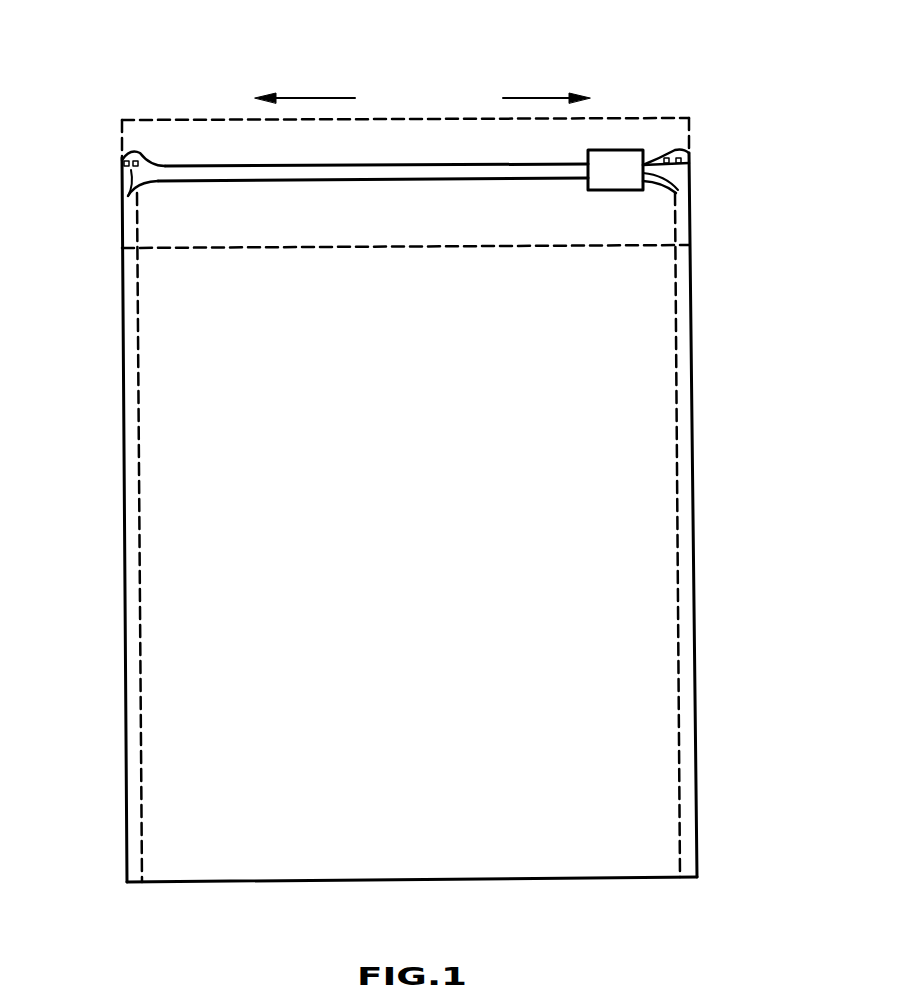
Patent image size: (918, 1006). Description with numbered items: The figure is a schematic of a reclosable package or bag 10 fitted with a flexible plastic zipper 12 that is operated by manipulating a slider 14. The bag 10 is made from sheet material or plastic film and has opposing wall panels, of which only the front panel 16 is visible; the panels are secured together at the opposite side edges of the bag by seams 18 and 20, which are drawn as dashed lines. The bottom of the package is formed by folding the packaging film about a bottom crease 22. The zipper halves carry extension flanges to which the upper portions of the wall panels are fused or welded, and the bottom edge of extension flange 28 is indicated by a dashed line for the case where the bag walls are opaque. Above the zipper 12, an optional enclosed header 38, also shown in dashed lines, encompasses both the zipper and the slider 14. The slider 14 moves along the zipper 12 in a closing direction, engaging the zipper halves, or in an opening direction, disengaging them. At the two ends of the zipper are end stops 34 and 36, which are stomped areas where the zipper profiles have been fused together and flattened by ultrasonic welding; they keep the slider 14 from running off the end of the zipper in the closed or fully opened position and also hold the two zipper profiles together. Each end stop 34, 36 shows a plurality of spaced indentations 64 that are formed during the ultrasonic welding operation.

The reclosable package or bag 10 is at (434, 500).
The flexible plastic zipper 12 is at (187, 172).
The slider 14 is at (613, 150).
The front panel 16 is at (648, 632).
The seam 18 is at (140, 626).
The seam 20 is at (677, 432).
The bottom crease 22 is at (575, 880).
The extension flange 28 is at (355, 250).
The end stop 34 is at (125, 181).
The end stop 36 is at (687, 137).
The enclosed header 38 is at (403, 117).
The spaced indentations 64 is at (122, 164).